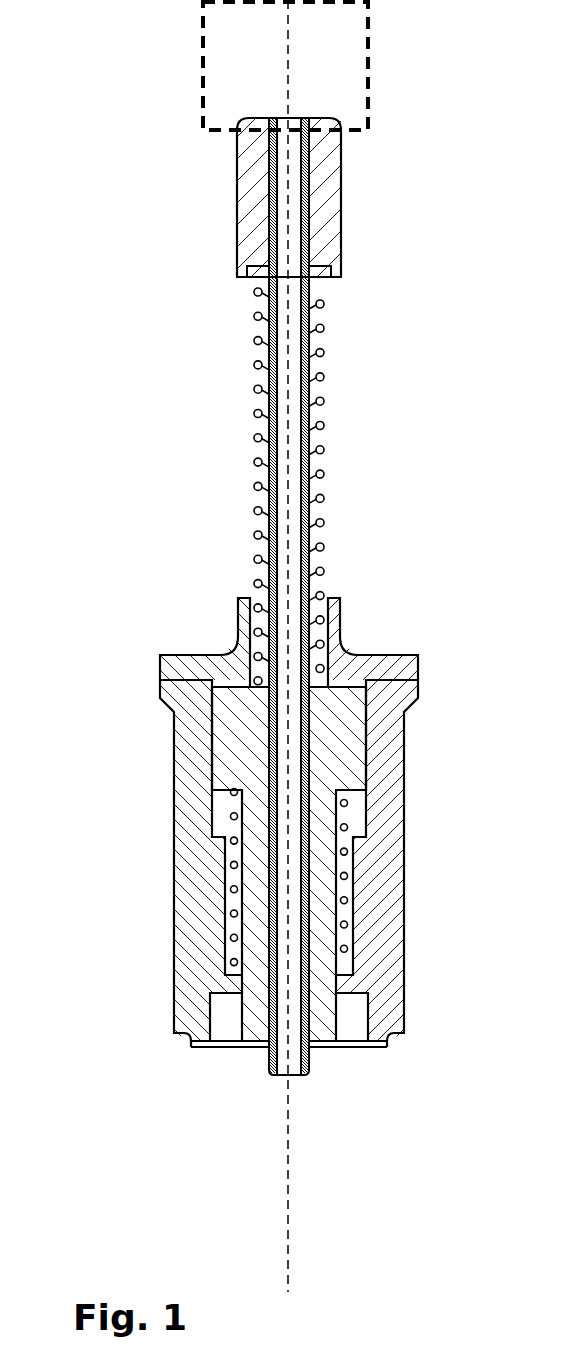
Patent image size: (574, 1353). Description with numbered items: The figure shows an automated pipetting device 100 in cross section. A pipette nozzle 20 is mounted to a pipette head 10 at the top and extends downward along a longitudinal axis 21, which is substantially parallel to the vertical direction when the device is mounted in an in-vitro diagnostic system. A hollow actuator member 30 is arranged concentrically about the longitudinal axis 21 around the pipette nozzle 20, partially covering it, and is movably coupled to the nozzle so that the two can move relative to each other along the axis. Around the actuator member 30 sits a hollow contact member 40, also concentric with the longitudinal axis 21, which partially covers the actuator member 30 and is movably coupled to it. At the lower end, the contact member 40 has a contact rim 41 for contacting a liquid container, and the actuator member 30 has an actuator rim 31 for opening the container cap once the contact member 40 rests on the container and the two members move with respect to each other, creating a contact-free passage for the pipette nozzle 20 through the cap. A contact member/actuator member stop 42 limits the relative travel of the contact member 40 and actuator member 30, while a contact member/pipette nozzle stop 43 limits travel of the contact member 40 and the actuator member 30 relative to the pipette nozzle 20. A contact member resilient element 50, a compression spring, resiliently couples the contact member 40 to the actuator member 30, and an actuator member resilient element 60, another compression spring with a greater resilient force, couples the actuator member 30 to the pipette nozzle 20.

The automated pipetting device 100 is at (172, 106).
The pipette head 10 is at (348, 66).
The pipette nozzle 20 is at (237, 250).
The longitudinal axis 21 is at (288, 1220).
The actuator member 30 is at (253, 875).
The actuator rim 31 is at (257, 1037).
The contact member 40 is at (173, 728).
The contact rim 41 is at (187, 1035).
The contact member/actuator member stop 42 is at (215, 835).
The contact member/pipette nozzle stop 43 is at (242, 597).
The contact member resilient element 50 is at (233, 915).
The actuator member resilient element 60 is at (253, 437).